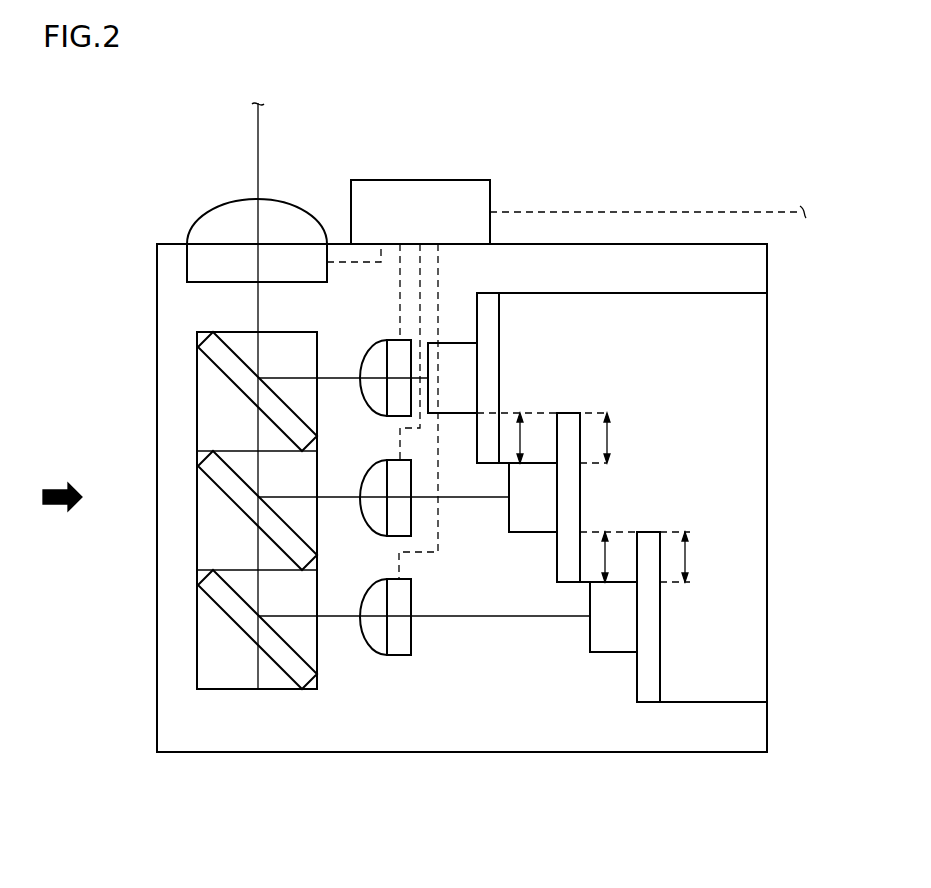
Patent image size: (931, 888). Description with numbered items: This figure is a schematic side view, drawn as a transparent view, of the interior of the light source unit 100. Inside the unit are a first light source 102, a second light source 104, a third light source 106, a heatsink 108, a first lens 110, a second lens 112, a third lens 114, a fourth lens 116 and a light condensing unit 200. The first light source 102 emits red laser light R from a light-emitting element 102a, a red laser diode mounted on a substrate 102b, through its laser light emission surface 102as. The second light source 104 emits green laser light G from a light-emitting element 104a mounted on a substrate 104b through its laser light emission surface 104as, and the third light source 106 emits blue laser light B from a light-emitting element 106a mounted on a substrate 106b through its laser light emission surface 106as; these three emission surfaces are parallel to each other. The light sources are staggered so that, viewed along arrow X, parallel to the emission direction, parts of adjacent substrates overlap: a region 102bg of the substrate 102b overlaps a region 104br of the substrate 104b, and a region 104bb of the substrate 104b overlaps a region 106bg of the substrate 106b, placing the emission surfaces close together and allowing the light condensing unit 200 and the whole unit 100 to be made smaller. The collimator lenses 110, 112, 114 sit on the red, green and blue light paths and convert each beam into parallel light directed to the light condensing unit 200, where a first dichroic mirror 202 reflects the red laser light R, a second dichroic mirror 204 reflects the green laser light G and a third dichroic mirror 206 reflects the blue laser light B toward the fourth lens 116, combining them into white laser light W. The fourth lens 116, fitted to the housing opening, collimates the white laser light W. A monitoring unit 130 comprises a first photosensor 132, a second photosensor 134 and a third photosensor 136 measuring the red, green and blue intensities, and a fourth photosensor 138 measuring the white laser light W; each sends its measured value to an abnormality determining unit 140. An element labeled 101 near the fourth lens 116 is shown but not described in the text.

The light source unit 100 is at (480, 869).
The light emitting device 101 is at (239, 213).
The first light source 102 is at (511, 358).
The light-emitting element 102a is at (458, 343).
The laser light emission surface 102as is at (422, 378).
The substrate 102b is at (485, 293).
The region 102bg is at (521, 440).
The second light source 104 is at (570, 515).
The light-emitting element 104a is at (522, 533).
The laser light emission surface 104as is at (508, 498).
The substrate 104b is at (572, 583).
The region 104br is at (611, 437).
The region 104bb is at (607, 556).
The third light source 106 is at (618, 644).
The light-emitting element 106a is at (605, 652).
The laser light emission surface 106as is at (590, 618).
The substrate 106b is at (651, 703).
The region 106bg is at (686, 556).
The heatsink 108 is at (757, 638).
The first lens 110 is at (363, 348).
The second lens 112 is at (368, 507).
The third lens 114 is at (391, 643).
The fourth lens 116 is at (223, 203).
The monitoring unit 130 is at (578, 341).
The first photosensor 132 is at (393, 339).
The second photosensor 134 is at (396, 537).
The third photosensor 136 is at (403, 655).
The fourth photosensor 138 is at (187, 265).
The abnormality determining unit 140 is at (490, 197).
The light condensing unit 200 is at (207, 567).
The first dichroic mirror 202 is at (223, 372).
The second dichroic mirror 204 is at (223, 496).
The third dichroic mirror 206 is at (223, 612).
The white laser light W is at (258, 151).
The arrow X is at (62, 507).
The red laser light R is at (334, 381).
The green laser light G is at (334, 500).
The blue laser light B is at (454, 619).